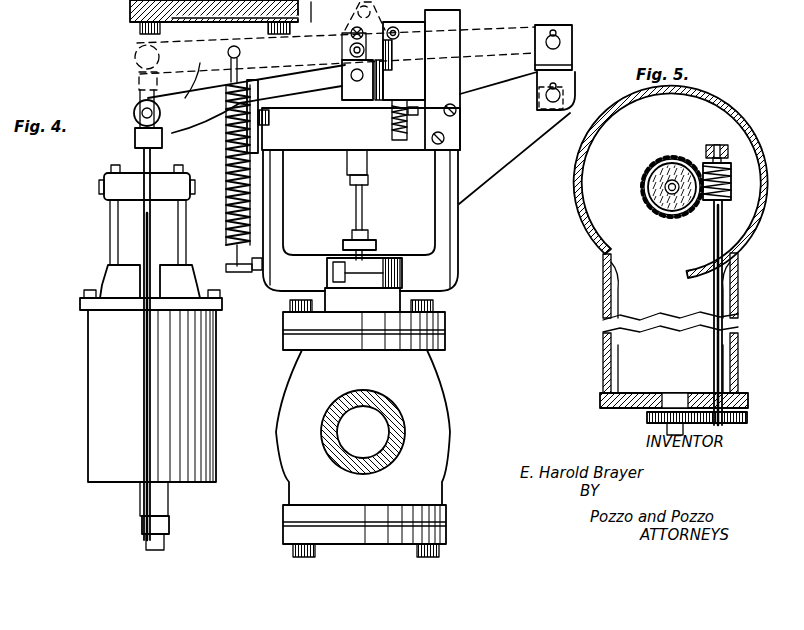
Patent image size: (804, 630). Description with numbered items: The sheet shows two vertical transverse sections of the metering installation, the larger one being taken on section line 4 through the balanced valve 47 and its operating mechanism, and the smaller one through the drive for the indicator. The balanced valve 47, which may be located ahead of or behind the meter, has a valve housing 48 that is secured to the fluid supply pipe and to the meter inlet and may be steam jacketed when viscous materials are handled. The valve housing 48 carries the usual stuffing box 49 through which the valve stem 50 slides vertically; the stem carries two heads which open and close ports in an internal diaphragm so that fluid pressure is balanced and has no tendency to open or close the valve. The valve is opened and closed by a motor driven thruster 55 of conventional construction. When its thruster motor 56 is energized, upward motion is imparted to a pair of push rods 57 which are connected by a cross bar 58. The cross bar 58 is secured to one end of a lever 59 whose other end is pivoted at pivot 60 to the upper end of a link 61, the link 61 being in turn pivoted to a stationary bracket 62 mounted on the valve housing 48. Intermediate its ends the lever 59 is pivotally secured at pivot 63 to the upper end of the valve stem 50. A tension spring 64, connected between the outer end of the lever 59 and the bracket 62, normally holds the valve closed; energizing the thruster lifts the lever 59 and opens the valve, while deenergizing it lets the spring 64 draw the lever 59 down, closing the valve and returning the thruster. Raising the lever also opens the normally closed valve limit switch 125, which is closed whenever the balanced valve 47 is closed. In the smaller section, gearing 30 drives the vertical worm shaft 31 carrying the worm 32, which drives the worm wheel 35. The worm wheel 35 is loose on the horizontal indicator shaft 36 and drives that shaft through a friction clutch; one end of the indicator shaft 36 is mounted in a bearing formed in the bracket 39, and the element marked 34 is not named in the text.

In FIG. 4, the section line 4 is at (337, 10).
In FIG. 4, the balanced valve 47 is at (450, 472).
In FIG. 4, the valve housing 48 is at (444, 392).
In FIG. 4, the stuffing box 49 is at (382, 252).
In FIG. 4, the valve stem 50 is at (364, 200).
In FIG. 4, the motor driven thruster 55 is at (100, 372).
In FIG. 4, the thruster motor 56 is at (108, 226).
In FIG. 4, the push rods 57 is at (135, 94).
In FIG. 4, the cross bar 58 is at (135, 79).
In FIG. 4, the lever 59 is at (228, 47).
In FIG. 4, the pivot 60 is at (573, 41).
In FIG. 4, the link 61 is at (575, 72).
In FIG. 4, the stationary bracket 62 is at (460, 217).
In FIG. 4, the pivot 63 is at (340, 49).
In FIG. 4, the tension spring 64 is at (227, 228).
In FIG. 4, the valve limit switch 125 is at (406, 74).
In FIG. 5, the gearing 30 is at (703, 425).
In FIG. 5, the worm shaft 31 is at (713, 247).
In FIG. 5, the worm 32 is at (732, 194).
In FIG. 5, the worm gear 34 is at (636, 187).
In FIG. 5, the worm wheel 35 is at (656, 214).
In FIG. 5, the indicator shaft 36 is at (673, 182).
In FIG. 5, the bracket 39 is at (604, 299).